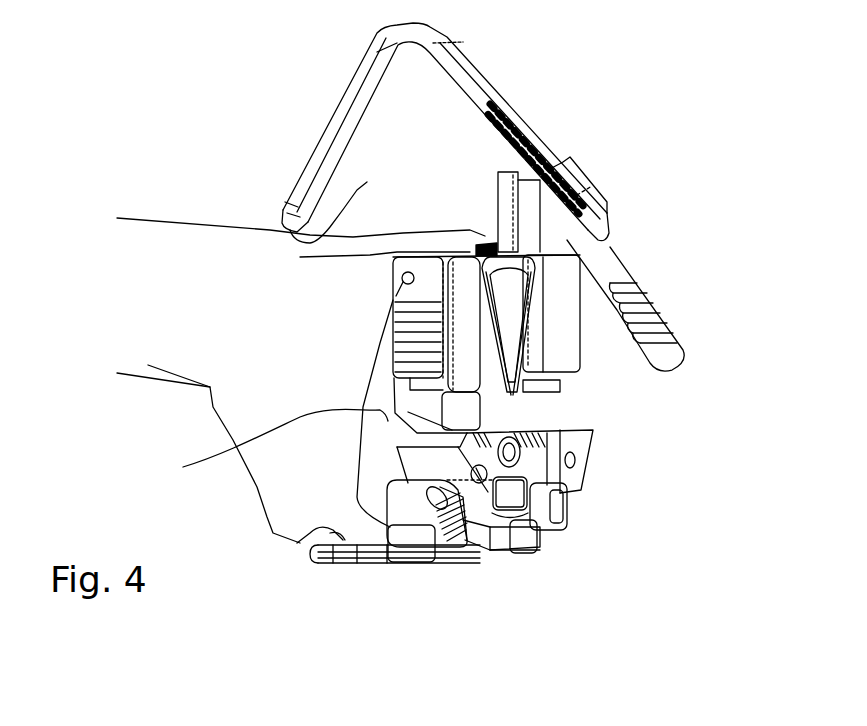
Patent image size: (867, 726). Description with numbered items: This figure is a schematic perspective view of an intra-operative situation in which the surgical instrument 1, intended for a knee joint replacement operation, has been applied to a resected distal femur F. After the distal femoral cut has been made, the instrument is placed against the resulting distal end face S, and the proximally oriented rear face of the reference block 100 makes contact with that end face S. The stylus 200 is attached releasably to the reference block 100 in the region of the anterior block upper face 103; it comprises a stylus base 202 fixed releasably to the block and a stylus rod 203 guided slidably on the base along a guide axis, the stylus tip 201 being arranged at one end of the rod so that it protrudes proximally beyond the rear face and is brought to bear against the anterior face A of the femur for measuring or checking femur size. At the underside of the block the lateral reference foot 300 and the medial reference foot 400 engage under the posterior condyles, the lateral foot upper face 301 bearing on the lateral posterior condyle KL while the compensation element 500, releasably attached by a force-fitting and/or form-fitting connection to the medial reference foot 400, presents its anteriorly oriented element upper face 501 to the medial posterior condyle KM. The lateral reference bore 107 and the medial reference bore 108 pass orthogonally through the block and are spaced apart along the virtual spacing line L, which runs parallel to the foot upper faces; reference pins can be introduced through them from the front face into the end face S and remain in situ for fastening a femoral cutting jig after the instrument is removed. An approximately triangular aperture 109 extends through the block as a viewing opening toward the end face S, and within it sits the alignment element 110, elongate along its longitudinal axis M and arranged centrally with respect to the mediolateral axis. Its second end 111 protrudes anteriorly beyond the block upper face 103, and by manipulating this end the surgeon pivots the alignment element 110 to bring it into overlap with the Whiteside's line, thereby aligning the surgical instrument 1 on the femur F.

The surgical instrument 1 is at (616, 78).
The reference block 100 is at (486, 394).
The anterior block upper face 103 is at (423, 250).
The lateral reference bore 107 is at (578, 465).
The medial reference bore 108 is at (497, 480).
The aperture 109 is at (568, 335).
The alignment element 110 is at (490, 278).
The second end 111 is at (477, 232).
The stylus 200 is at (516, 133).
The stylus tip 201 is at (347, 199).
The stylus base 202 is at (594, 206).
The stylus rod 203 is at (497, 83).
The lateral reference foot 300 is at (532, 517).
The lateral foot upper face 301 is at (505, 548).
The medial reference foot 400 is at (400, 565).
The compensation element 500 is at (352, 565).
The element upper face 501 is at (330, 533).
The anterior face A is at (258, 228).
The longitudinal axis M is at (483, 240).
The femur F is at (183, 361).
The distal end face S is at (277, 443).
The medial posterior condyle KM is at (273, 530).
The lateral posterior condyle KL is at (487, 547).
The virtual spacing line L is at (523, 470).